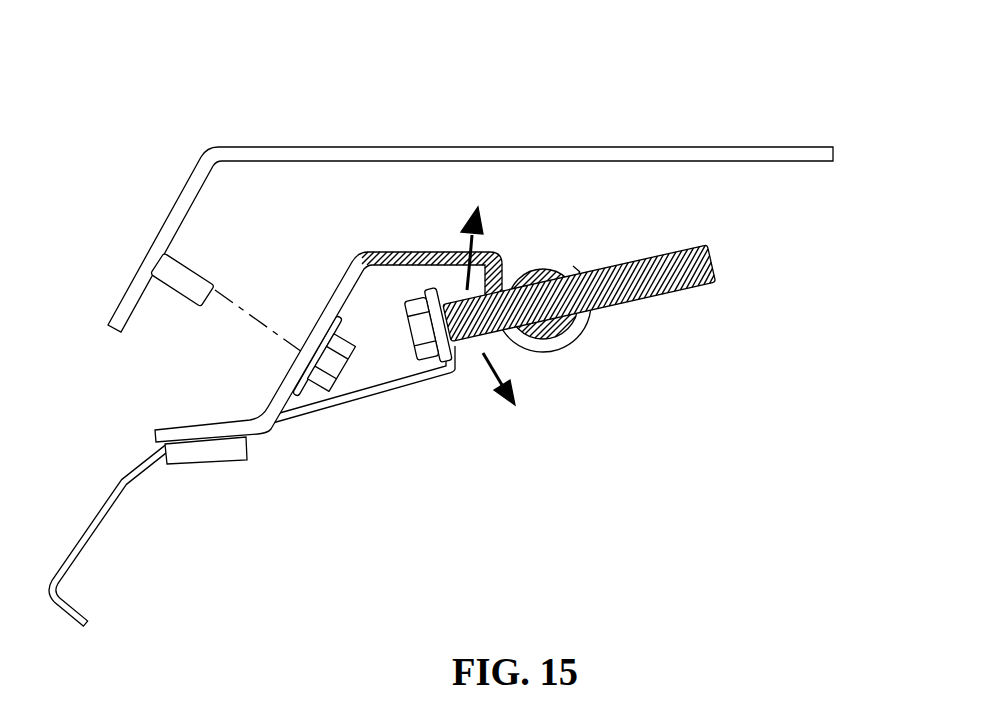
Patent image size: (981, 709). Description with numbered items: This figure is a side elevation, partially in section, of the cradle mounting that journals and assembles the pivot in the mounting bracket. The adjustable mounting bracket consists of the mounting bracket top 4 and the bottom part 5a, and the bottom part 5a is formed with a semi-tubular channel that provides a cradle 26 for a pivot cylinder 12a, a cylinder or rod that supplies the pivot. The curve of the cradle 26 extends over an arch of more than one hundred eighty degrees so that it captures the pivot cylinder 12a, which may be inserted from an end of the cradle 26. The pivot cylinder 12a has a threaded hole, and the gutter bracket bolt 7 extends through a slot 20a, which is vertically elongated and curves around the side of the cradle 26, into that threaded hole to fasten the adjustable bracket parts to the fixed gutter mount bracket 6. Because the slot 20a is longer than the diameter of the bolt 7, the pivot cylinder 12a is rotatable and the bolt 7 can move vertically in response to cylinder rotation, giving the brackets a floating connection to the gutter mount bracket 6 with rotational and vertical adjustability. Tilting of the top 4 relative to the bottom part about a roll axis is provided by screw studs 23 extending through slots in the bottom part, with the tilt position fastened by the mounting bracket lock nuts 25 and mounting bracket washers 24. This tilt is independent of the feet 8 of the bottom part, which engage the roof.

The mounting bracket top 4 is at (302, 146).
The bottom part of the mounting bracket 5a is at (423, 250).
The screw studs 23 is at (186, 303).
The feet 8 is at (193, 460).
The gutter mount bracket 6 is at (405, 387).
The mounting bracket washers 24 is at (297, 393).
The mounting bracket lock nuts 25 is at (332, 365).
The gutter bracket bolt 7 is at (657, 296).
The slot 20a is at (542, 342).
The cradle 26 is at (590, 323).
The pivot cylinder 12a is at (547, 263).